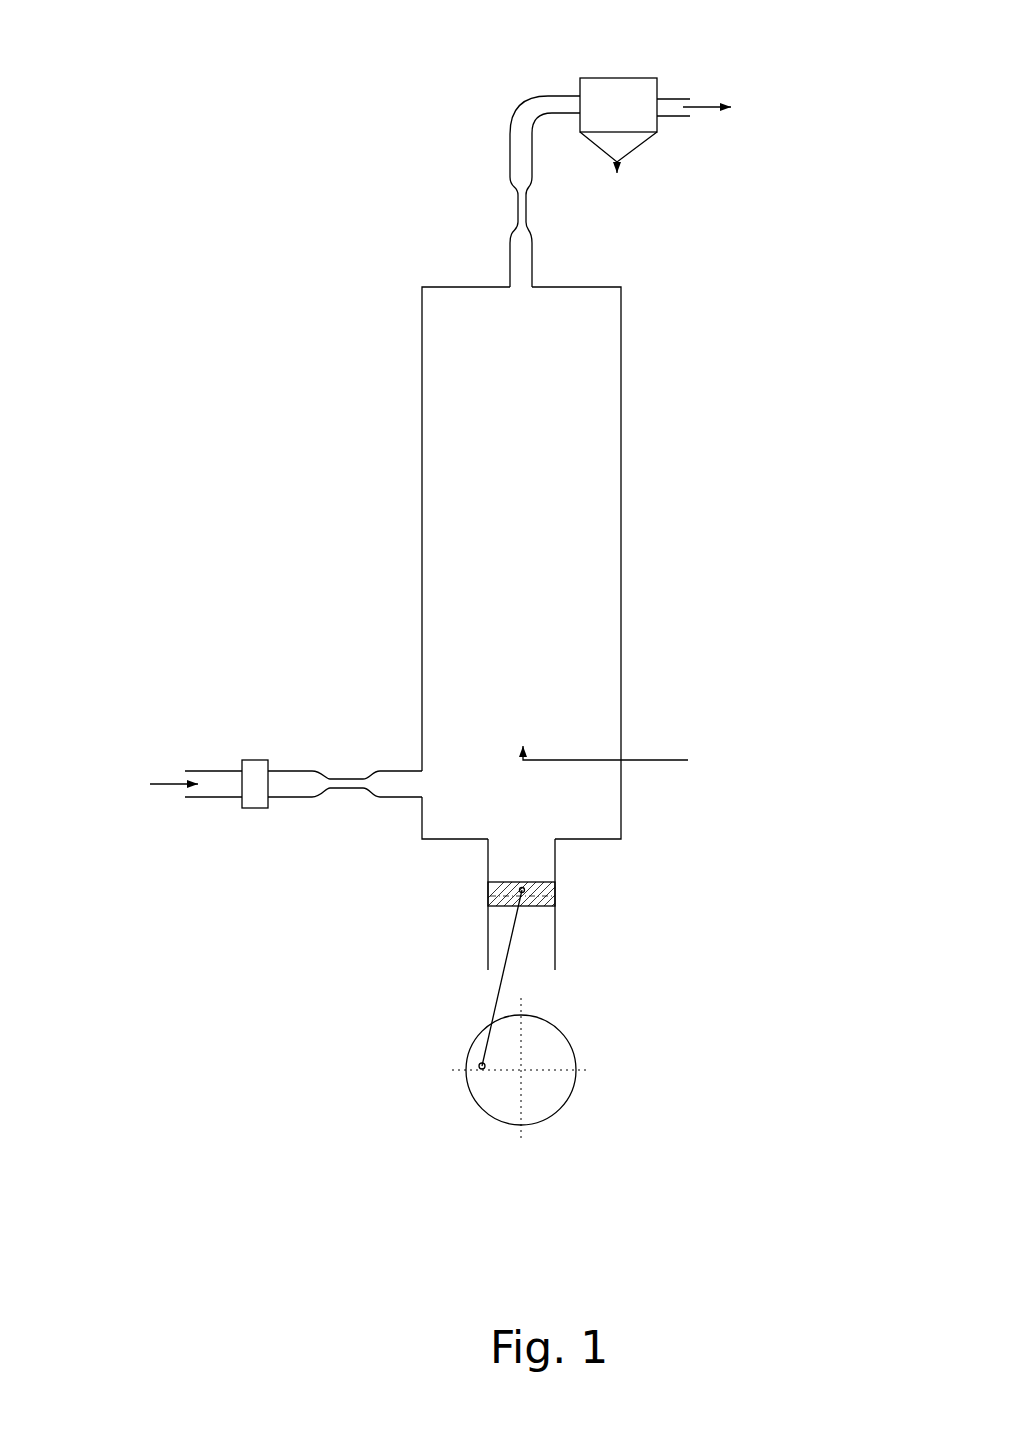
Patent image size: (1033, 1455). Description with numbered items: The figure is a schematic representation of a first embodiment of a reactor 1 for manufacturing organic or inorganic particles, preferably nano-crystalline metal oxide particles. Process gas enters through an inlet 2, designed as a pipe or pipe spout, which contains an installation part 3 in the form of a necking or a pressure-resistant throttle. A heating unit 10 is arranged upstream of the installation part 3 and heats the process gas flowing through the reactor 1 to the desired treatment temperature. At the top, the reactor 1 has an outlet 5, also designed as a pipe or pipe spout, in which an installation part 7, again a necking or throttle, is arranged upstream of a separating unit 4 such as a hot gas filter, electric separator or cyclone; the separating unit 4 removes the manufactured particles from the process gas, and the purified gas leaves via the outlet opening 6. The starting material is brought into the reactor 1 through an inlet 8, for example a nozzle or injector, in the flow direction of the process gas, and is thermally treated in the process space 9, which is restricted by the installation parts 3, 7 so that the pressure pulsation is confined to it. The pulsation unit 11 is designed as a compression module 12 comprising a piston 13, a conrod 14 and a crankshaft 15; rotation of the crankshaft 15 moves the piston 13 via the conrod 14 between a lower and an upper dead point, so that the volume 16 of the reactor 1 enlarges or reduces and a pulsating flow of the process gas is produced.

The reactor 1 is at (128, 33).
The inlet 2 is at (310, 832).
The installation part 3 is at (352, 778).
The separating unit 4 is at (621, 78).
The outlet 5 is at (468, 102).
The outlet opening 6 is at (700, 97).
The installation part 7 is at (517, 213).
The inlet 8 is at (662, 760).
The process space 9 is at (621, 542).
The heating unit 10 is at (247, 810).
The pulsation unit 11 is at (641, 1003).
The compression module 12 is at (403, 1034).
The piston 13 is at (542, 893).
The conrod 14 is at (497, 989).
The crankshaft 15 is at (547, 1100).
The volume 16 is at (600, 338).